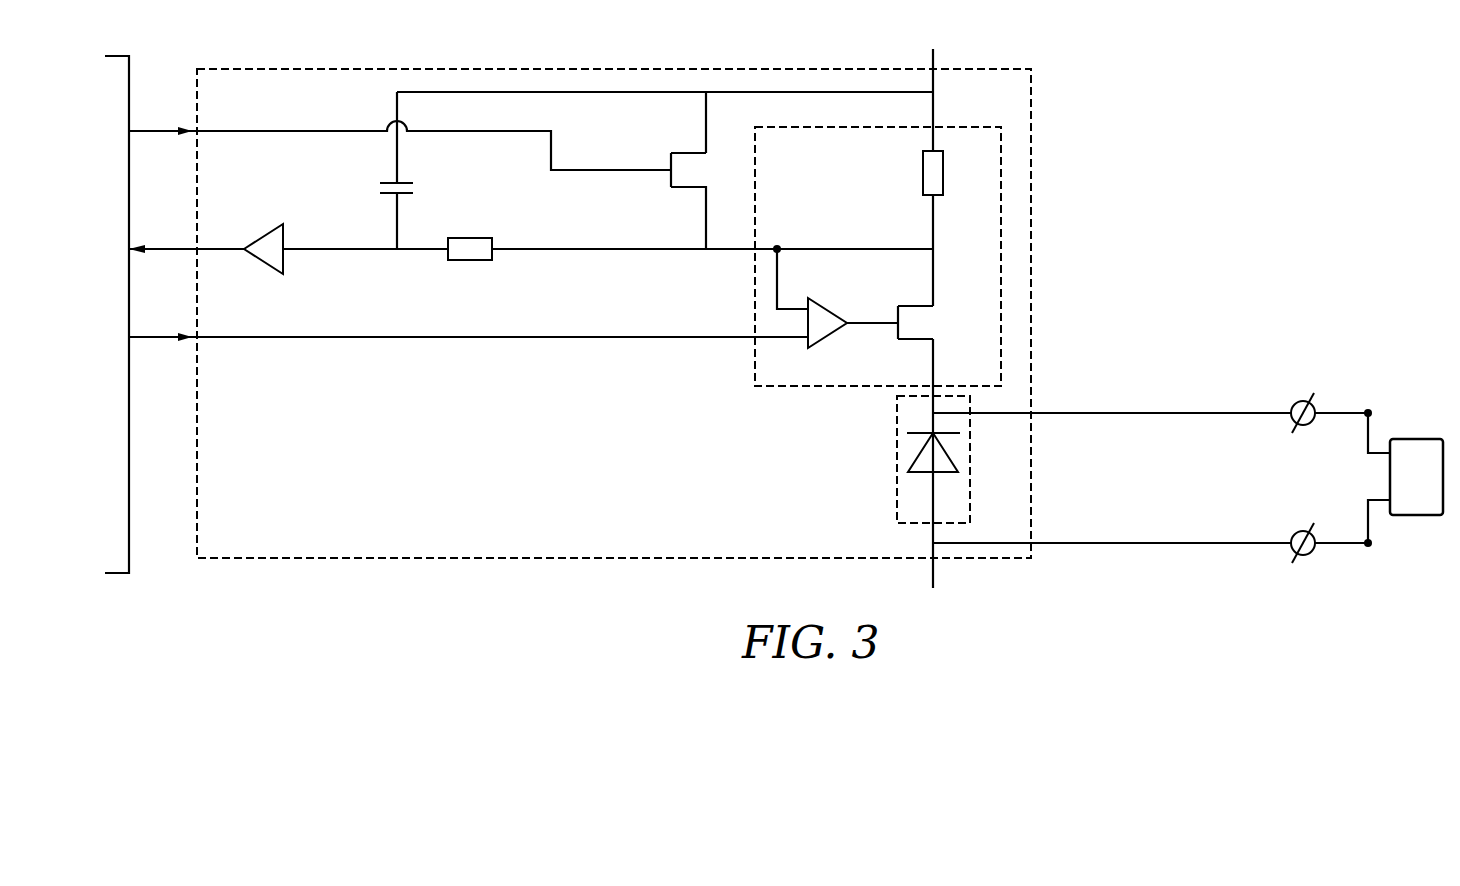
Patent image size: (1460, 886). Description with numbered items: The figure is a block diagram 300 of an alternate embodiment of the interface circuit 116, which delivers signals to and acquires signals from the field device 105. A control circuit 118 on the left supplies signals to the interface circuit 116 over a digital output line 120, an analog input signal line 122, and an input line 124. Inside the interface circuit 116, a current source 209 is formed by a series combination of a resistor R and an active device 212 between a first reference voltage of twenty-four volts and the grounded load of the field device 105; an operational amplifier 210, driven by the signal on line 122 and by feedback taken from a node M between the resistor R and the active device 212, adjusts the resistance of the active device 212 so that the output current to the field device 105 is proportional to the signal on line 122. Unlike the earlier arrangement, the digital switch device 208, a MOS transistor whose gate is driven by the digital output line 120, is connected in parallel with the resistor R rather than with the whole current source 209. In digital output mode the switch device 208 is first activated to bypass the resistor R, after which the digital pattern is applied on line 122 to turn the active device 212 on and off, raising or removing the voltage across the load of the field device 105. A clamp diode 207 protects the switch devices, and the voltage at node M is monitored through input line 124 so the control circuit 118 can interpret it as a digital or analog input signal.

The control circuit 118 is at (127, 57).
The interface circuit 116 is at (612, 67).
The digital output line 120 is at (400, 136).
The input line 124 is at (531, 265).
The analog input signal line 122 is at (468, 323).
The digital switch device 208 is at (684, 140).
The current source 209 is at (1002, 197).
The operational amplifier 210 is at (803, 355).
The active device 212 is at (925, 322).
The clamp diode 207 is at (890, 458).
The field device 105 is at (1188, 478).
The block diagram 300 is at (672, 315).